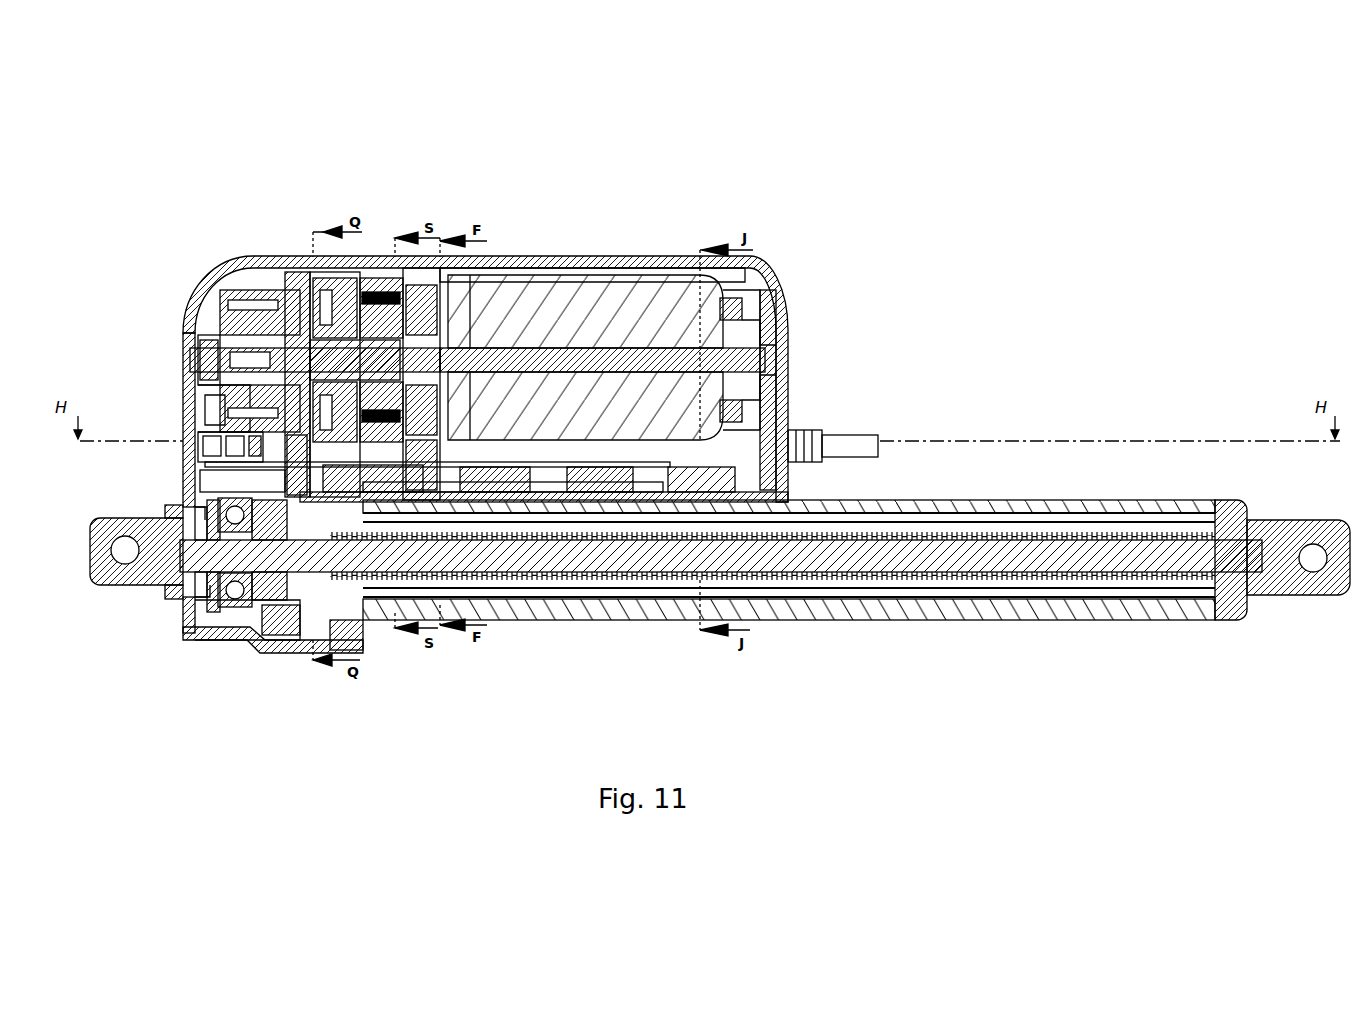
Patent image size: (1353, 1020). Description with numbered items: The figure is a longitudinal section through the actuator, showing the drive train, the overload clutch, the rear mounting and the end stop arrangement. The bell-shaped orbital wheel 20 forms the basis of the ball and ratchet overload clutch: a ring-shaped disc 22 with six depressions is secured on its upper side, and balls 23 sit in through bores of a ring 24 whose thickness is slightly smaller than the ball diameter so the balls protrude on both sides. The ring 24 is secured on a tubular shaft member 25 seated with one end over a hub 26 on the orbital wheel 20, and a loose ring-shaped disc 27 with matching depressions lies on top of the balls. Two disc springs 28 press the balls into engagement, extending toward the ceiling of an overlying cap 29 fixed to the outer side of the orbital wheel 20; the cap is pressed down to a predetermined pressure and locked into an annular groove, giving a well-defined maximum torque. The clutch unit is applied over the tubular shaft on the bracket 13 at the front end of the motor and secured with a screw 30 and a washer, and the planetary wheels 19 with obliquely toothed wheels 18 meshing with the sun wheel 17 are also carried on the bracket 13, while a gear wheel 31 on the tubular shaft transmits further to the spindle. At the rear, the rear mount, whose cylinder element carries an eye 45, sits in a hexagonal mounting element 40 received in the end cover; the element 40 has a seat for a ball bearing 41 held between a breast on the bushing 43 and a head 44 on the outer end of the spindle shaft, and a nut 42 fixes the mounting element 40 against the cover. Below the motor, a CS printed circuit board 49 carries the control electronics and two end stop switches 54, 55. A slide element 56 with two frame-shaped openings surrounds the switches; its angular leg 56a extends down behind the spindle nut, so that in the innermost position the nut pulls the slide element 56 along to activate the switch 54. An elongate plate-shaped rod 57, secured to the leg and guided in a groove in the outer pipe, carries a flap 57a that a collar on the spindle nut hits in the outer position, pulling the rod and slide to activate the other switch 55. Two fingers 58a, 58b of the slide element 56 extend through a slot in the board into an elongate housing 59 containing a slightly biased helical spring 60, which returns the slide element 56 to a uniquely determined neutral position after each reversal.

The bracket 13 is at (740, 93).
The sun wheel 17 is at (520, 257).
The obliquely toothed wheels 18 is at (622, 93).
The planetary wheels 19 is at (563, 93).
The orbital wheel 20 is at (508, 93).
The ring-shaped disc 22 is at (456, 93).
The balls 23 is at (397, 93).
The ring 24 is at (345, 90).
The tubular shaft member 25 is at (237, 327).
The hub 26 is at (188, 350).
The loose ring-shaped disc 27 is at (325, 257).
The disc springs 28 is at (308, 257).
The cap 29 is at (283, 257).
The screw 30 is at (188, 392).
The gear wheel 31 is at (212, 432).
The mounting element 40 is at (218, 610).
The ball bearing 41 is at (243, 607).
The nut 42 is at (172, 592).
The bushing 43 is at (298, 645).
The head 44 is at (207, 597).
The eye 45 is at (118, 587).
The CS printed circuit board 49 is at (557, 460).
The end stop switch 54 is at (560, 580).
The end stop switch 55 is at (612, 480).
The slide element 56 is at (438, 618).
The angular leg 56a is at (368, 596).
The plate-shaped rod 57 is at (935, 515).
The flap 57a is at (1052, 525).
The finger 58a is at (797, 93).
The finger 58b is at (940, 93).
The elongate housing 59 is at (875, 93).
The helical spring 60 is at (490, 605).